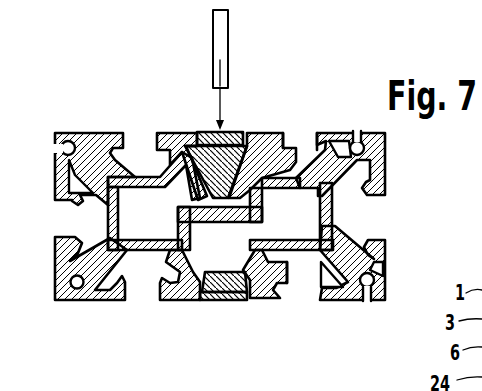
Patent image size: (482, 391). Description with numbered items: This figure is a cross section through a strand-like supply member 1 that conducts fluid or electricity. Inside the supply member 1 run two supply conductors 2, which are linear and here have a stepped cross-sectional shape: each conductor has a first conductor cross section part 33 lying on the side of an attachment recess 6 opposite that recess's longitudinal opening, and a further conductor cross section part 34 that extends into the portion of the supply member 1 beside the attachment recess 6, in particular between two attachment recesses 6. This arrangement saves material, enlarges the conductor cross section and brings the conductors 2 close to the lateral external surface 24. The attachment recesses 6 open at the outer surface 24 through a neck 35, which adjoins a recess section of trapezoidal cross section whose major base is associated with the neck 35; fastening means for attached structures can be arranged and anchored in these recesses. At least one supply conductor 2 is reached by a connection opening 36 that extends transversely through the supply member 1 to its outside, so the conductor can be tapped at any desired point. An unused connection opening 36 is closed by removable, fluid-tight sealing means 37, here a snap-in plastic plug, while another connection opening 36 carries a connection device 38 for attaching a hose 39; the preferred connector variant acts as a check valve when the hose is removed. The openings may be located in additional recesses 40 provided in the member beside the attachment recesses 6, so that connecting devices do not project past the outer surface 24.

The supply member 1 is at (388, 163).
The supply conductor 2 is at (137, 153).
The attachment recess 6 is at (131, 128).
The lateral external surface 24 is at (48, 150).
The first conductor cross section part 33 is at (317, 203).
The further conductor cross section part 34 is at (262, 130).
The neck 35 is at (318, 128).
The connection opening 36 is at (238, 128).
The sealing means 37 is at (220, 300).
The connection device 38 is at (200, 122).
The hose 39 is at (228, 20).
The recess 40 is at (180, 123).